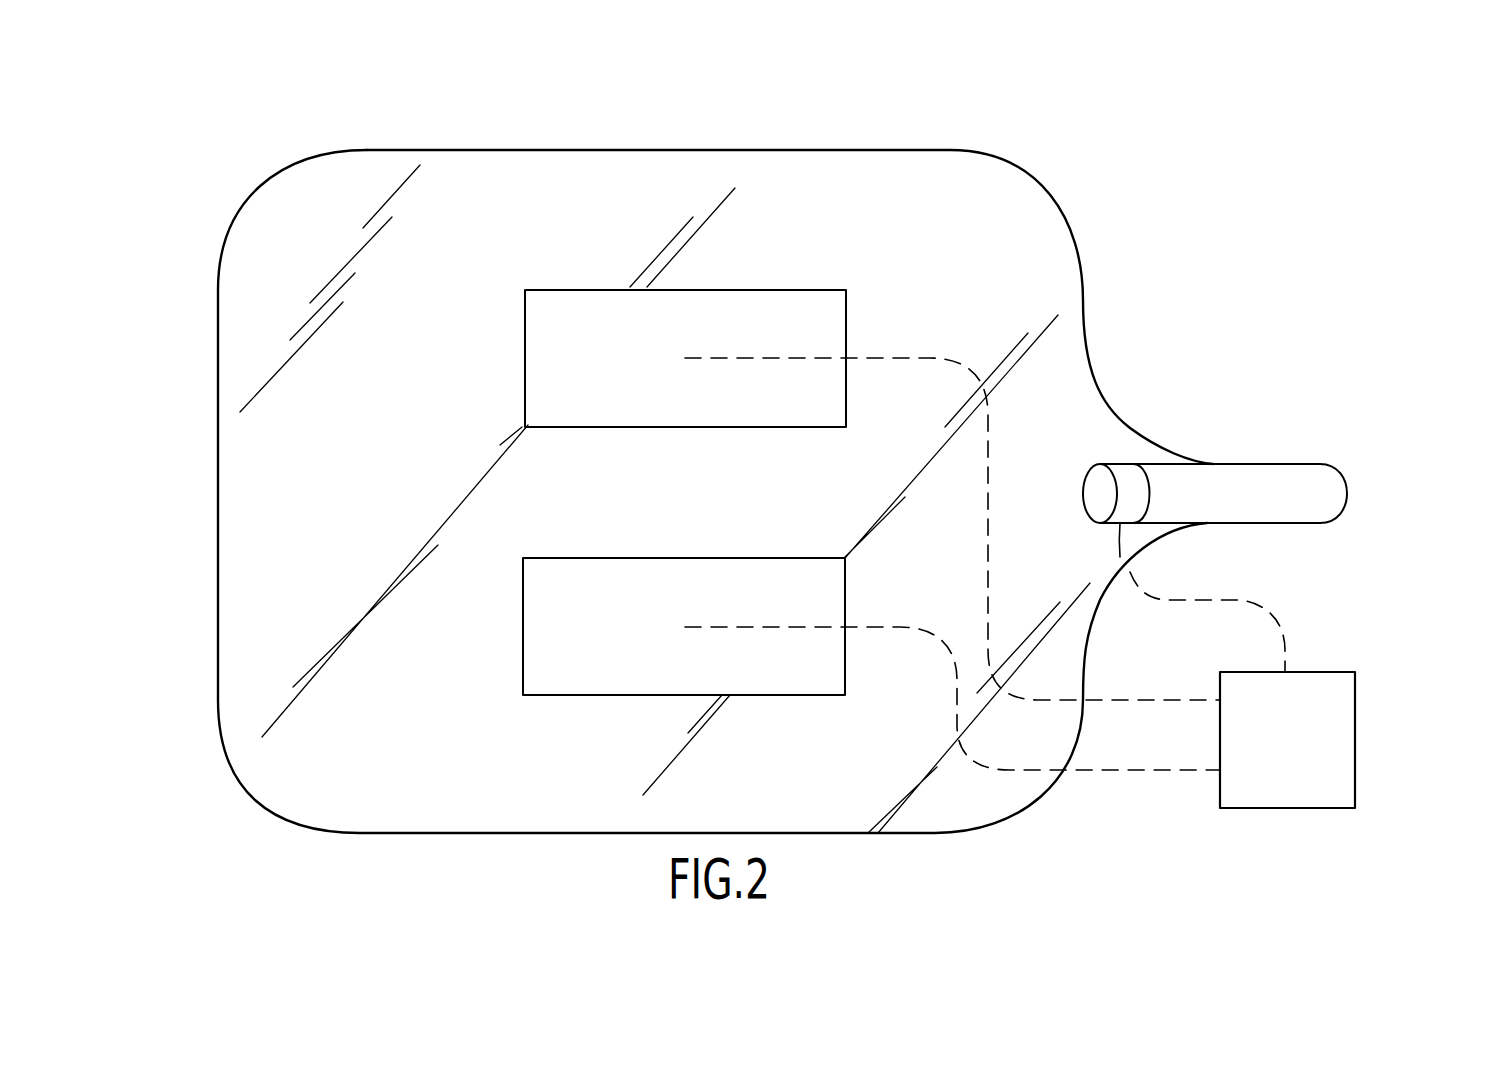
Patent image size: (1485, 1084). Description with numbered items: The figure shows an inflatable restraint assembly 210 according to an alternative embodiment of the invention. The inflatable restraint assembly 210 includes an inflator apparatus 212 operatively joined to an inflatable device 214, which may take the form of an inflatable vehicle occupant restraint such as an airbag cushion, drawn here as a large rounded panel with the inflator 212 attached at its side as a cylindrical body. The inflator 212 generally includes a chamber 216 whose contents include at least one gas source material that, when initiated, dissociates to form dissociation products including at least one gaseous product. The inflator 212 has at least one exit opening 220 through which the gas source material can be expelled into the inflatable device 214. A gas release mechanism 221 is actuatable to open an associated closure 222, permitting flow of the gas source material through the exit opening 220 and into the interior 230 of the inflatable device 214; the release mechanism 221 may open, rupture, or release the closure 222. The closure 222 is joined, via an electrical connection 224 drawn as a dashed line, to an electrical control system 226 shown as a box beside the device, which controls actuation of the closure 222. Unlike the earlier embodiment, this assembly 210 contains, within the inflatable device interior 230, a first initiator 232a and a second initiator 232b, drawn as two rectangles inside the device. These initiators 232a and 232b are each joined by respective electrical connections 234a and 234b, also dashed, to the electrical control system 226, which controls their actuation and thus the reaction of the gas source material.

The inflatable restraint assembly 210 is at (1052, 126).
The inflator apparatus 212 is at (1306, 484).
The inflatable device 214 is at (486, 145).
The chamber 216 is at (1248, 503).
The exit opening 220 is at (1152, 488).
The gas release mechanism 221 is at (1133, 595).
The closure 222 is at (1127, 475).
The electrical connection 224 is at (1277, 632).
The electrical control system 226 is at (1318, 748).
The interior of the inflatable device 230 is at (705, 212).
The first initiator 232a is at (618, 347).
The second initiator 232b is at (652, 612).
The electrical connection 234a is at (907, 358).
The electrical connection 234b is at (892, 627).